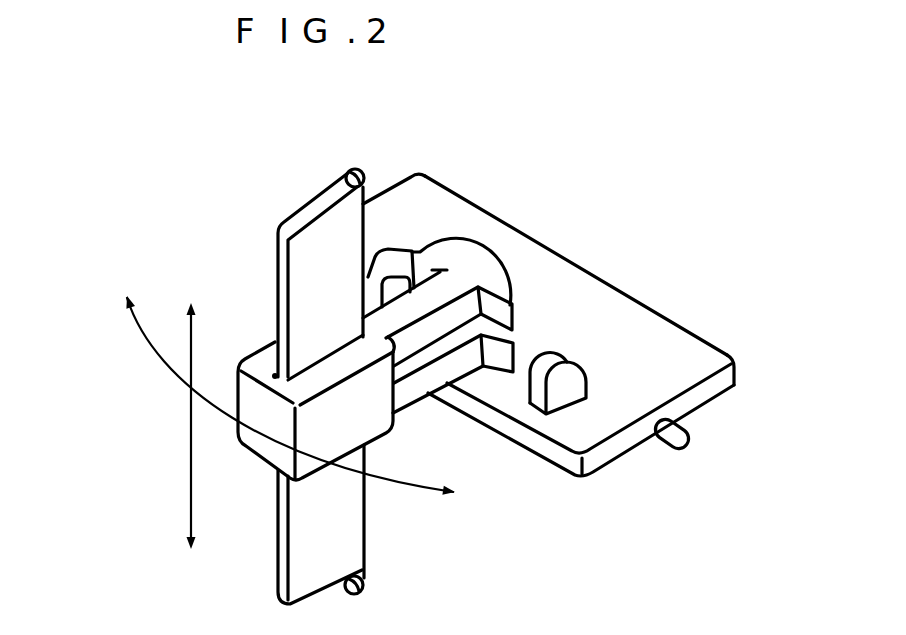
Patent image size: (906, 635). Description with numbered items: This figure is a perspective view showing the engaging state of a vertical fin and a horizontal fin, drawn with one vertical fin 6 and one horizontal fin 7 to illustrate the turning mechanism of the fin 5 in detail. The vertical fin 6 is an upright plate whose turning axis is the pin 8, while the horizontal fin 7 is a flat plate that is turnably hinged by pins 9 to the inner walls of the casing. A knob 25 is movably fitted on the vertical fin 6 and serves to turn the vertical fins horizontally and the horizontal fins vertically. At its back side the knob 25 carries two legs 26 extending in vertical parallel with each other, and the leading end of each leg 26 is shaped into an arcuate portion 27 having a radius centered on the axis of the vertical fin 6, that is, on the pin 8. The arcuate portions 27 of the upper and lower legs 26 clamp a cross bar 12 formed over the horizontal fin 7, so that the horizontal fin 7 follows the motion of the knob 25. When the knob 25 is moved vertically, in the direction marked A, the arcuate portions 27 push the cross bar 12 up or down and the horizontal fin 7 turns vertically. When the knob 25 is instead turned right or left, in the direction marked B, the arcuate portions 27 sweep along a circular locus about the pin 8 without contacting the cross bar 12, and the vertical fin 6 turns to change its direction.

The fin 5 is at (401, 160).
The vertical fin 6 is at (285, 220).
The horizontal fin 7 is at (583, 268).
The pin 8 is at (346, 177).
The pin 9 is at (688, 438).
The cross bar 12 is at (548, 348).
The knob 25 is at (256, 470).
The leg 26 is at (413, 333).
The arcuate portion 27 is at (477, 252).